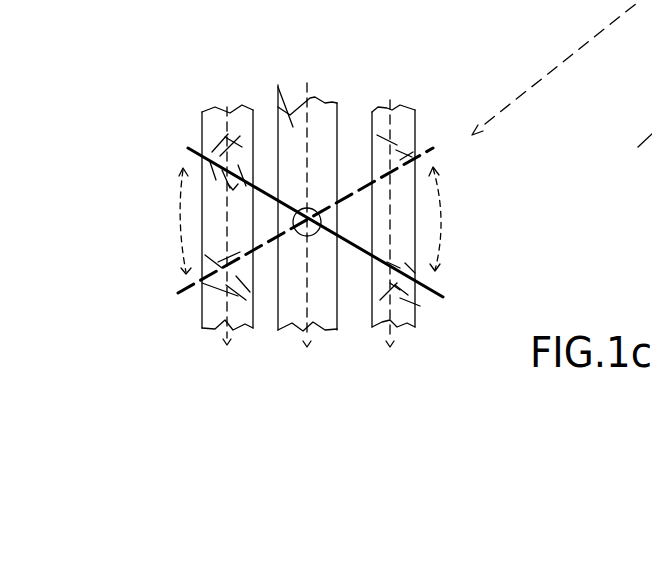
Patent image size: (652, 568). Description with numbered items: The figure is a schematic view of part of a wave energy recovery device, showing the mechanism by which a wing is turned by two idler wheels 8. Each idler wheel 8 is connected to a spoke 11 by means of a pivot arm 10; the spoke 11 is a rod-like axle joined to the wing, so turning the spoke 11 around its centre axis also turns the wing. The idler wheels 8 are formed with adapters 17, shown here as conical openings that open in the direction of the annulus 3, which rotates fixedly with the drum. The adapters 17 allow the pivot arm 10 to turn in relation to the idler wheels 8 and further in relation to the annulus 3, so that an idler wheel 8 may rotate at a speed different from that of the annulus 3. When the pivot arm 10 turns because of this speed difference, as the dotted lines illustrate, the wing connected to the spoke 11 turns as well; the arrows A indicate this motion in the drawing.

The annulus 3 is at (299, 188).
The idler wheel 8 is at (213, 123).
The pivot arm 10 is at (377, 302).
The spoke 11 is at (296, 224).
The adapter 17 is at (233, 133).
The direction arrow A is at (318, 320).